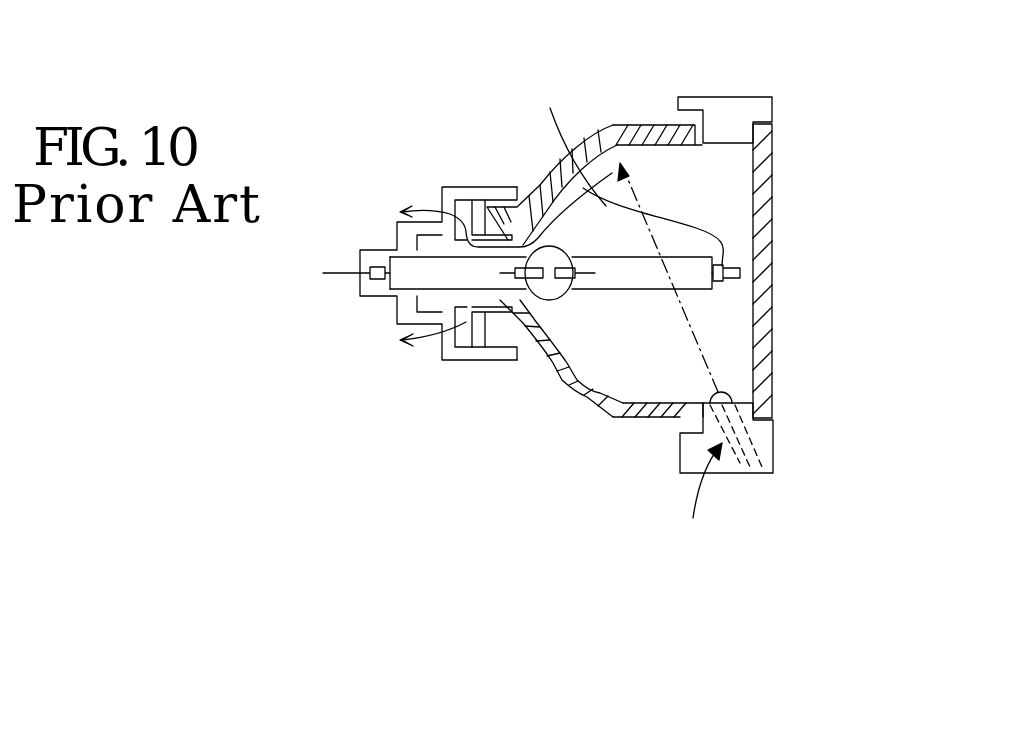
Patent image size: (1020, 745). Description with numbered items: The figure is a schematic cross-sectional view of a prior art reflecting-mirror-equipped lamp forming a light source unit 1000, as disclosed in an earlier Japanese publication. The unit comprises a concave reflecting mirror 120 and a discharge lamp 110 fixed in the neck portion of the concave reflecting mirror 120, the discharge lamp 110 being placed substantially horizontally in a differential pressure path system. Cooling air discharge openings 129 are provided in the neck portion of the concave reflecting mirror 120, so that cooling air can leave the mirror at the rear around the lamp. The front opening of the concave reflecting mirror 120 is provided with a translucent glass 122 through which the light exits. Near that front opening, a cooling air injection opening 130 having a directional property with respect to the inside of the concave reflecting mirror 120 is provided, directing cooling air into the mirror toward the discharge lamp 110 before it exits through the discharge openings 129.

The light source unit 1000 is at (698, 76).
The discharge lamp 110 is at (550, 300).
The concave reflecting mirror 120 is at (582, 398).
The translucent glass 122 is at (769, 348).
The cooling air discharge openings 129 is at (482, 293).
The cooling air injection opening 130 is at (724, 477).